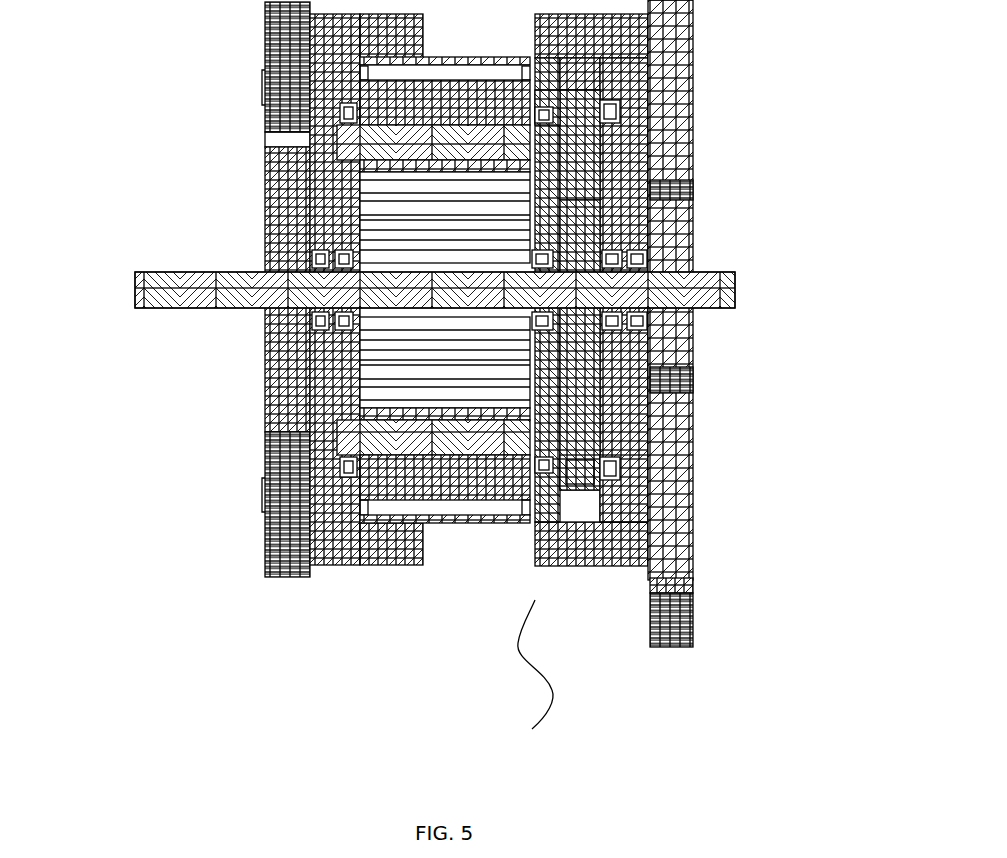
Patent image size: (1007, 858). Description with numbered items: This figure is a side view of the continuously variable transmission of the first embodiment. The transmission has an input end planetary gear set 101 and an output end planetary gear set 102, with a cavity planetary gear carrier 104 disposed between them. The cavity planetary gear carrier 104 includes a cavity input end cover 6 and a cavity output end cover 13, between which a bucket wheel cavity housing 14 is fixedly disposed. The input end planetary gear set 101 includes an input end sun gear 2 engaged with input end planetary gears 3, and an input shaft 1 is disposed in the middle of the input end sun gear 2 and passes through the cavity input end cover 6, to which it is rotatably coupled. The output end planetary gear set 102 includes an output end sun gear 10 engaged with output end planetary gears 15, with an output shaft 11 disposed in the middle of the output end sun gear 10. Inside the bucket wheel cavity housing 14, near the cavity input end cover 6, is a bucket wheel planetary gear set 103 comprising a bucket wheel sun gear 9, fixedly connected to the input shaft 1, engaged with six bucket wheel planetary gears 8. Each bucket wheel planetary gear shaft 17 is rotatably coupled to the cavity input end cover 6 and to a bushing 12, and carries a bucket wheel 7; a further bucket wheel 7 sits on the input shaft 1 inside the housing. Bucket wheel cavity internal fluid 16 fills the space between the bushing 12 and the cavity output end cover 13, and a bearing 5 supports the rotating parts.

The input shaft 1 is at (735, 272).
The input end sun gear 2 is at (680, 338).
The input end planetary gear 3 is at (652, 483).
The bearing 5 is at (618, 110).
The cavity input end cover 6 is at (646, 490).
The bucket wheel 7 is at (415, 402).
The bucket wheel planetary gear 8 is at (577, 173).
The bucket wheel sun gear 9 is at (577, 240).
The output end sun gear 10 is at (292, 232).
The output shaft 11 is at (190, 287).
The bushing 12 is at (543, 90).
The cavity output end cover 13 is at (342, 42).
The bucket wheel cavity housing 14 is at (480, 514).
The output end planetary gear 15 is at (305, 103).
The bucket wheel cavity internal fluid 16 is at (393, 510).
The bucket wheel planetary gear shaft 17 is at (388, 440).
The input end planetary gear set 101 is at (688, 640).
The output end planetary gear set 102 is at (310, 545).
The bucket wheel planetary gear set 103 is at (580, 463).
The cavity planetary gear carrier 104 is at (532, 729).